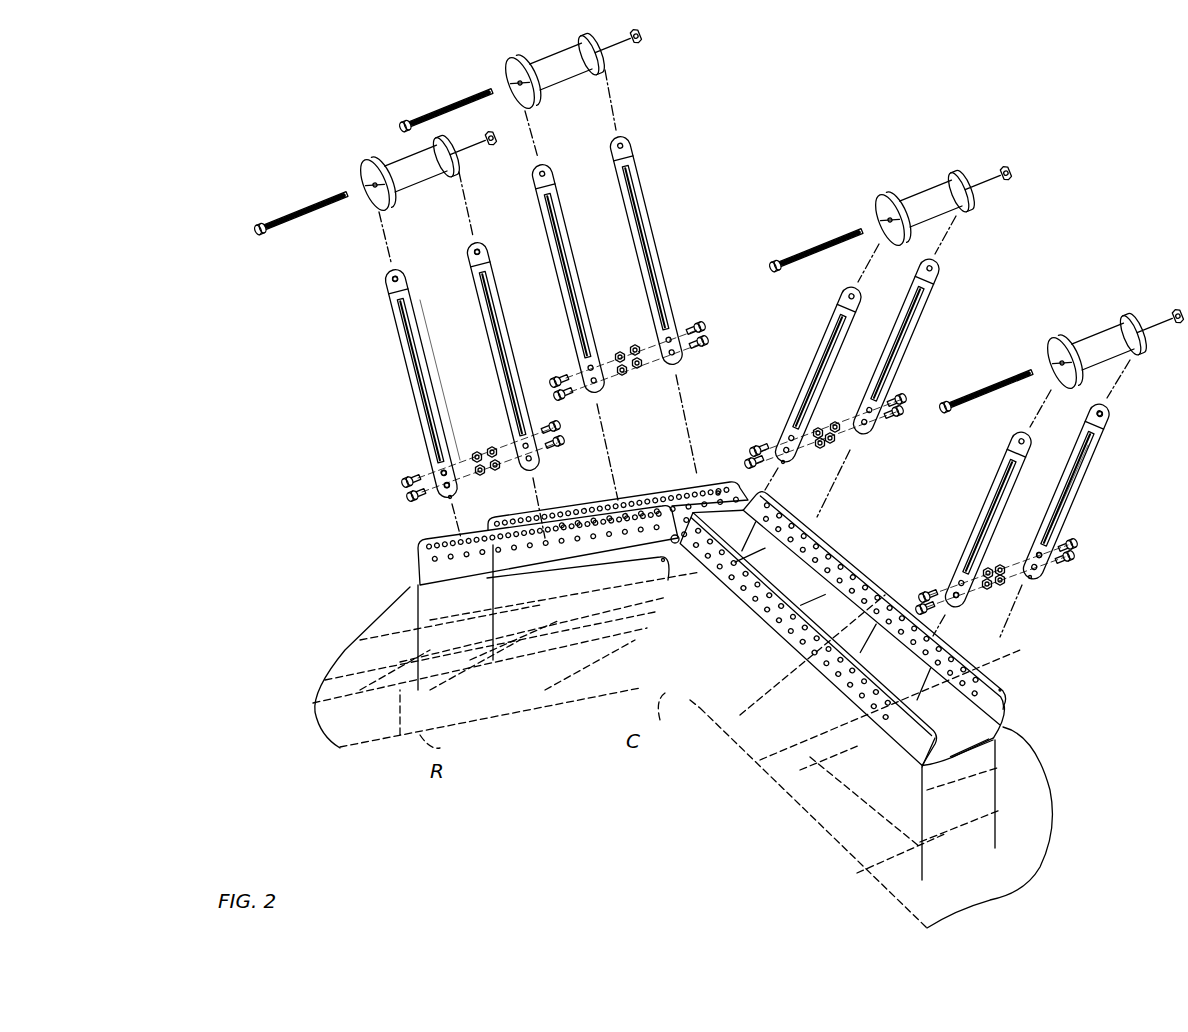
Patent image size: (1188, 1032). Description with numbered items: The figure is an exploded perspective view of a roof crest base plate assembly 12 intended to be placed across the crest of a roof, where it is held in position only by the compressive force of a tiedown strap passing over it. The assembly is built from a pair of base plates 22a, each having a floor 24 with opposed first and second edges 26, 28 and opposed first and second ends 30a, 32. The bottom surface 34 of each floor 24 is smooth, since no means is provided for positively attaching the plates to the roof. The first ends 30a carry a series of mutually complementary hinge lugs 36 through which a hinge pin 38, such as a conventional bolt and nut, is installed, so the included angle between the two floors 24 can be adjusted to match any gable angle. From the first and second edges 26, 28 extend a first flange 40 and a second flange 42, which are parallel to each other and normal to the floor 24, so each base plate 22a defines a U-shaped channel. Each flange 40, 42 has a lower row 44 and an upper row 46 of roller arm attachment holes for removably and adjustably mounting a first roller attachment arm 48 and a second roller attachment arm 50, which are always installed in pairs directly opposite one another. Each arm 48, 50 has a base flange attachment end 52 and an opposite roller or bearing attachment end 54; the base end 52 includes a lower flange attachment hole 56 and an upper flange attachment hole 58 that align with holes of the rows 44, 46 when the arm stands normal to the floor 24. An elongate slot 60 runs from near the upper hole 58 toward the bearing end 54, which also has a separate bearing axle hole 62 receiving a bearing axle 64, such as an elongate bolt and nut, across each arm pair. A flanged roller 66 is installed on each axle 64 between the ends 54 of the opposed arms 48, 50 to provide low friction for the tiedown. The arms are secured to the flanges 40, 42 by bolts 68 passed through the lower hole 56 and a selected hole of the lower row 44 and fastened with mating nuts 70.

The roof crest base plate assembly 12 is at (1120, 700).
The base plate 22a is at (410, 585).
The floor 24 is at (833, 634).
The first edge 26 is at (854, 706).
The second edge 28 is at (892, 595).
The first end 30a is at (778, 460).
The second end 32 is at (955, 758).
The bottom surface 34 is at (918, 754).
The hinge lug 36 is at (716, 492).
The hinge pin 38 is at (662, 560).
The first flange 40 is at (808, 676).
The second flange 42 is at (1000, 600).
The lower row of roller arm attachment holes 44 is at (416, 566).
The upper row of roller arm attachment holes 46 is at (417, 541).
The first roller attachment arm 48 is at (401, 336).
The second roller attachment arm 50 is at (489, 346).
The base flange attachment end 52 is at (450, 500).
The roller or bearing attachment end 54 is at (391, 272).
The lower flange attachment hole 56 is at (478, 492).
The upper flange attachment hole 58 is at (486, 456).
The elongate slot 60 is at (413, 386).
The bearing axle hole 62 is at (470, 249).
The bearing axle 64 is at (298, 214).
The flanged roller 66 is at (386, 158).
The bolt 68 is at (401, 487).
The nut 70 is at (500, 468).